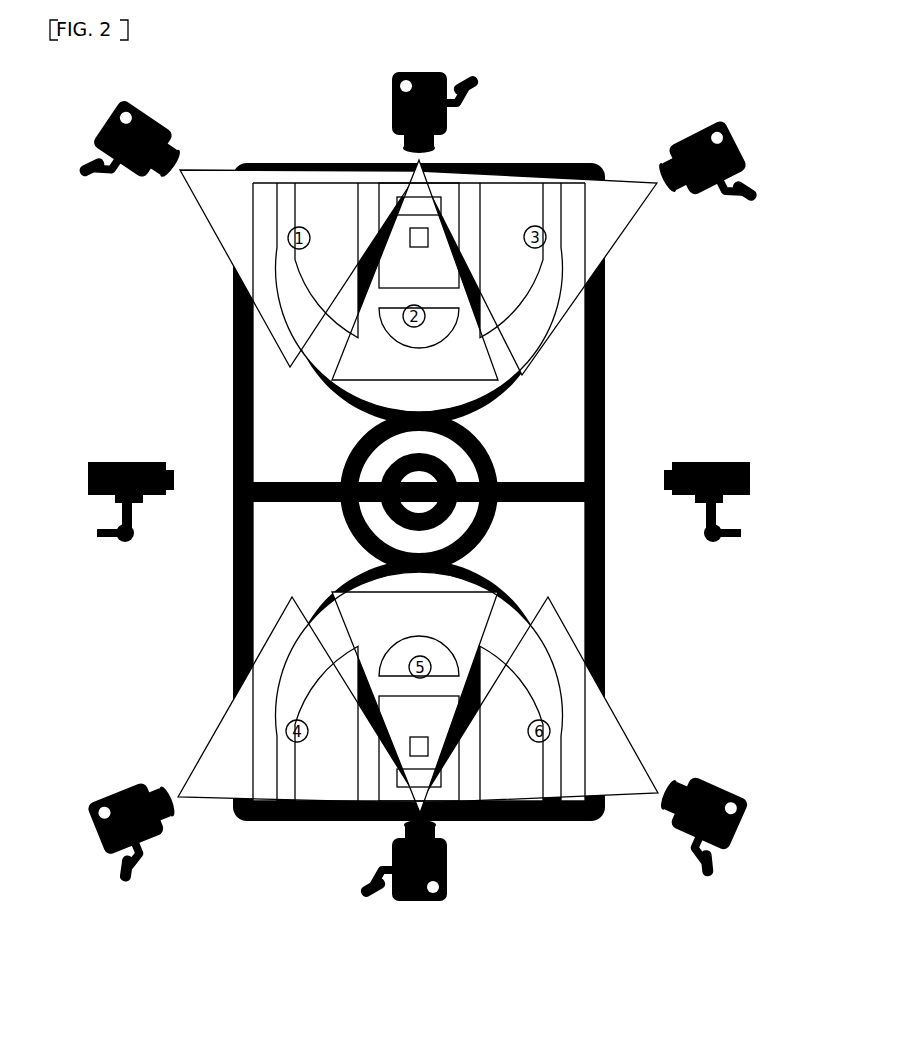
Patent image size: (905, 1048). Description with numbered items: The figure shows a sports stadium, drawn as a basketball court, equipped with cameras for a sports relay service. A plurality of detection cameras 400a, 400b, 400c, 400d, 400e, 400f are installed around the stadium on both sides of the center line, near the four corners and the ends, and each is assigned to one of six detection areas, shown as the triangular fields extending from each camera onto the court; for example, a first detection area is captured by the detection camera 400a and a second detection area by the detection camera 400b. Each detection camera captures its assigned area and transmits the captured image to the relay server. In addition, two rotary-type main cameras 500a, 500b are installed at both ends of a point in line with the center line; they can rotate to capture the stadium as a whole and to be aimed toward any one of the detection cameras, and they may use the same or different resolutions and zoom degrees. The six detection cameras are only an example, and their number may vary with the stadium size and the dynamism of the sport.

The detection camera 400a is at (165, 118).
The detection camera 400b is at (391, 102).
The detection camera 400c is at (683, 138).
The detection camera 400d is at (112, 797).
The detection camera 400e is at (447, 867).
The detection camera 400f is at (700, 768).
The main camera 500a is at (127, 462).
The main camera 500b is at (727, 462).